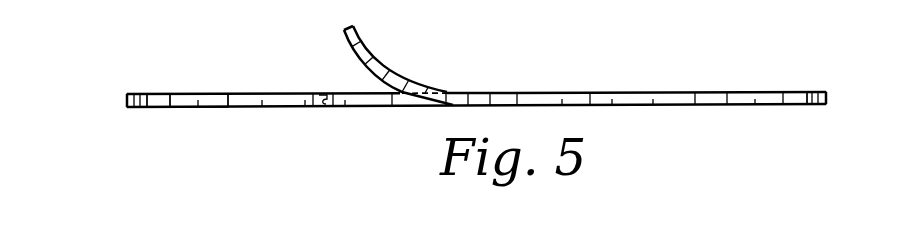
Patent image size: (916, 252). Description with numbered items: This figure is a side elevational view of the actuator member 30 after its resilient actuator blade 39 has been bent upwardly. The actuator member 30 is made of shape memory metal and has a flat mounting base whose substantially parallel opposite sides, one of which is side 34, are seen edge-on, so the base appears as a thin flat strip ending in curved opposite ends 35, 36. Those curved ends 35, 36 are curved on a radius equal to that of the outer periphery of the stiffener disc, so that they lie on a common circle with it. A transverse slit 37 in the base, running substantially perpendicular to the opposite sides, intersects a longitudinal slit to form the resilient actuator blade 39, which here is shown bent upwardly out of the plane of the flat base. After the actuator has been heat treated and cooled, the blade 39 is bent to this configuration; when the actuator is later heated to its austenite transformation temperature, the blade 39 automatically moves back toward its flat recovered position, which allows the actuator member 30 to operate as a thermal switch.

The actuator member 30 is at (708, 86).
The opposite side 34 is at (214, 107).
The curved opposite end 35 is at (127, 101).
The curved opposite end 36 is at (828, 97).
The transverse slit 37 is at (323, 107).
The resilient actuator blade 39 is at (378, 52).